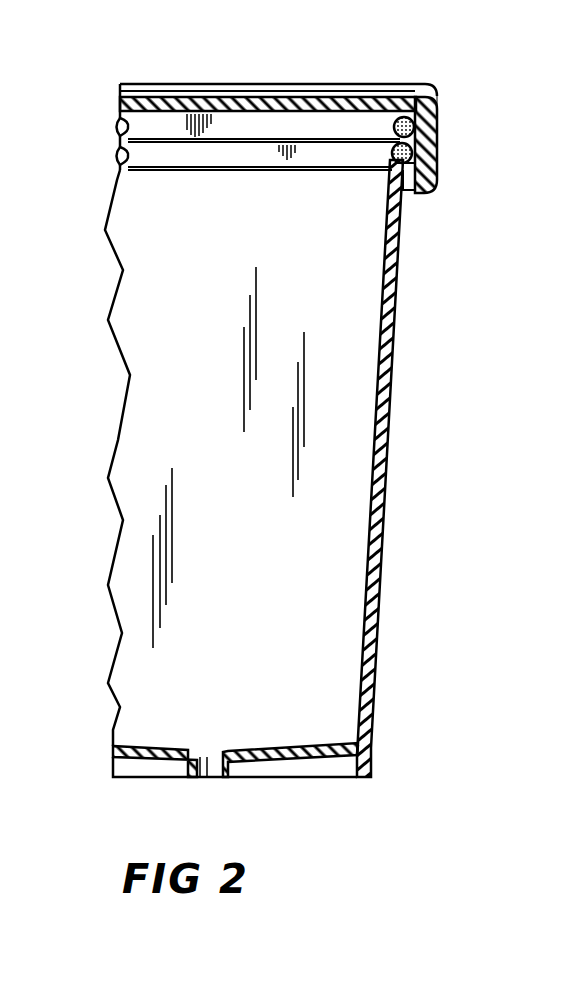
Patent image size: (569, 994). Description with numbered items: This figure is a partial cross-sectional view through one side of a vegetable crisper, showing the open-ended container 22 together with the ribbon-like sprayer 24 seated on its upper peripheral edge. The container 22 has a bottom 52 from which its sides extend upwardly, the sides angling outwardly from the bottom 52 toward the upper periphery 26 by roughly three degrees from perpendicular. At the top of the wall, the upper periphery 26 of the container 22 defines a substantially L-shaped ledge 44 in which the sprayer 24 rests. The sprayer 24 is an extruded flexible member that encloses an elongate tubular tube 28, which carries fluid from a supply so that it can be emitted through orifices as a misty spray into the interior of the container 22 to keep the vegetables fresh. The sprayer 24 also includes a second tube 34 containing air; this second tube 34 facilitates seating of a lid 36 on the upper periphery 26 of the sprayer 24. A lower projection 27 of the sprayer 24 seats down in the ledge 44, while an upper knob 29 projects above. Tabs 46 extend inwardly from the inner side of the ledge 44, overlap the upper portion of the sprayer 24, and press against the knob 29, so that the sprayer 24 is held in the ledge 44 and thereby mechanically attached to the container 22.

The open-ended container 22 is at (397, 390).
The sprayer 24 is at (414, 126).
The upper periphery 26 is at (497, 172).
The lower projection 27 is at (408, 188).
The elongate tubular tube 28 is at (412, 152).
The upper knob 29 is at (413, 118).
The second tube 34 is at (396, 128).
The lid 36 is at (260, 90).
The L-shape ledge 44 is at (416, 169).
The tabs 46 is at (433, 97).
The bottom 52 is at (282, 746).